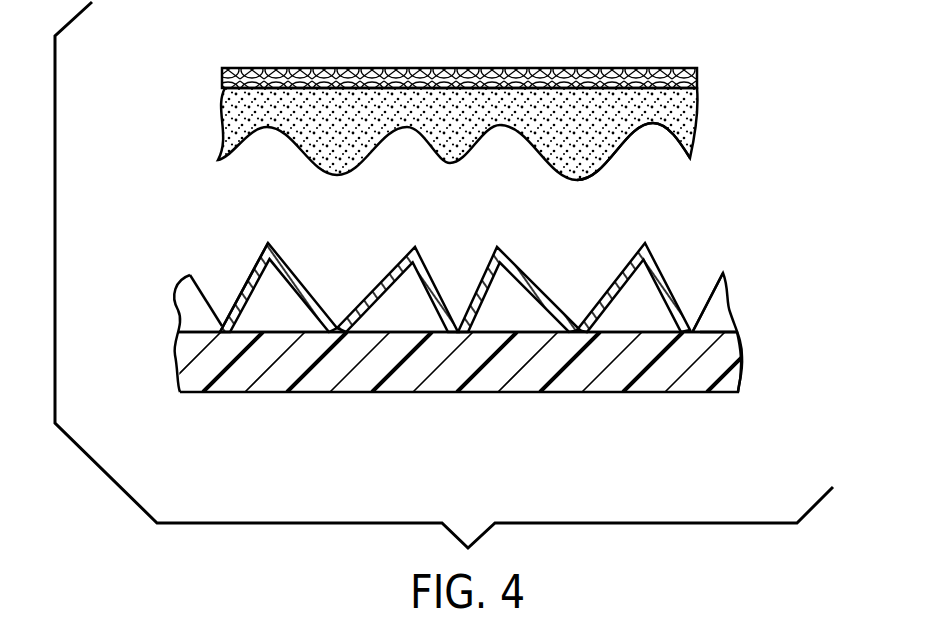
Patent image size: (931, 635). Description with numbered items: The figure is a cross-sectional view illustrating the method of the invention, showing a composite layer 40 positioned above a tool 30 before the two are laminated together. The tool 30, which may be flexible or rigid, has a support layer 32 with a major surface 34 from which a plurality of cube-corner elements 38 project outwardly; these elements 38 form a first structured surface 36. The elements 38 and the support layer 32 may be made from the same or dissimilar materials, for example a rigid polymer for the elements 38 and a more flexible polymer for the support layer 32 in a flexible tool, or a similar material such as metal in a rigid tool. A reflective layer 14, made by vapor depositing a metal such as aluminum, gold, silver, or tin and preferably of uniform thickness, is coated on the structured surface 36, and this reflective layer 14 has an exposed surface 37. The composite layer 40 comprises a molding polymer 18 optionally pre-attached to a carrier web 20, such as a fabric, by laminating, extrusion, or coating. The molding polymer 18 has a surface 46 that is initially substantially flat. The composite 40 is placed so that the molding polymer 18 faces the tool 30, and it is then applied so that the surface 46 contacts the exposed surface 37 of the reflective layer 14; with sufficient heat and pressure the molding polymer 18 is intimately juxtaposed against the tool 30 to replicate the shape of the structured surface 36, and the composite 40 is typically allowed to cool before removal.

The composite layer 40 is at (212, 67).
The carrier web 20 is at (468, 72).
The molding polymer 18 is at (694, 108).
The surface of the molding polymer 46 is at (682, 158).
The tool 30 is at (162, 268).
The support layer 32 is at (566, 380).
The major surface 34 is at (623, 330).
The reflective layer 14 is at (668, 285).
The exposed surface of the reflective layer 37 is at (235, 292).
The first structured surface 36 is at (706, 290).
The cube-corner elements 38 is at (723, 325).